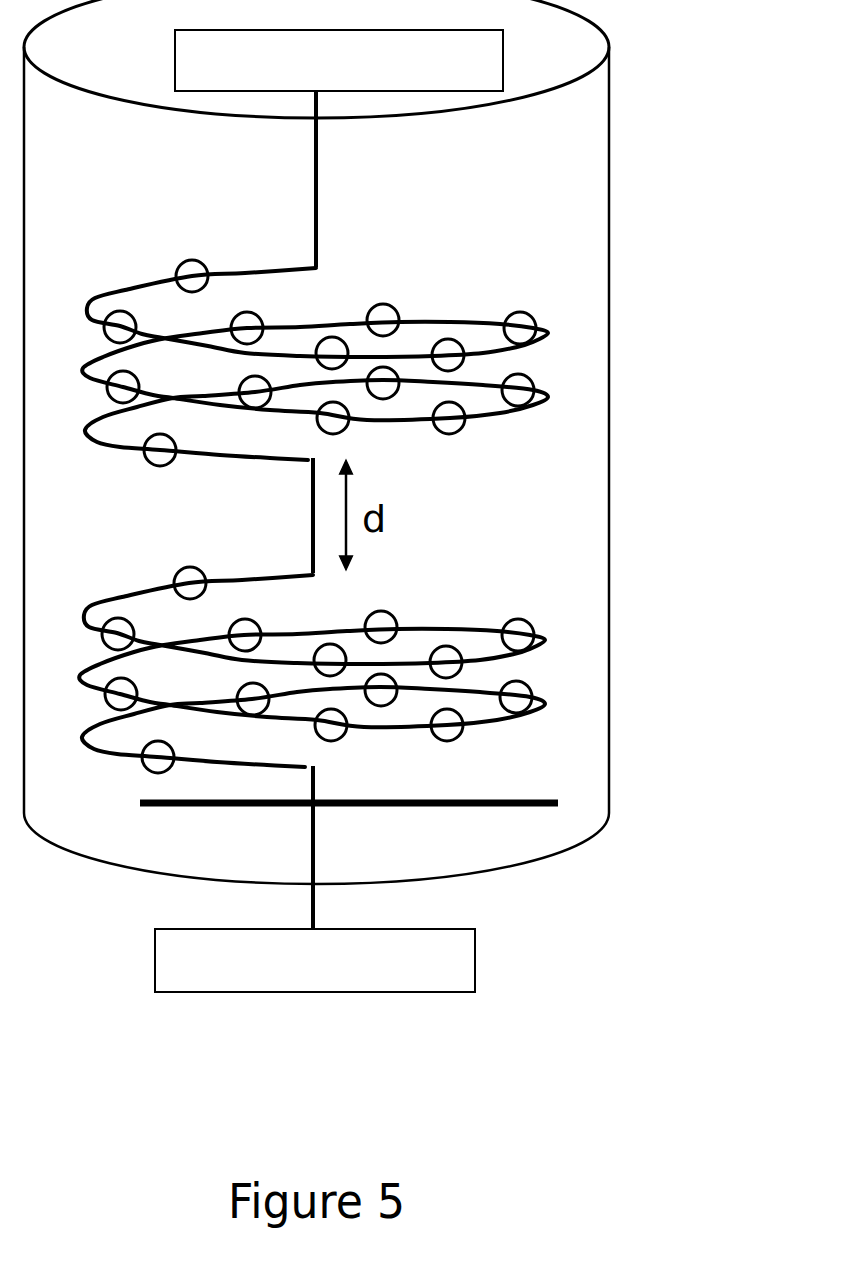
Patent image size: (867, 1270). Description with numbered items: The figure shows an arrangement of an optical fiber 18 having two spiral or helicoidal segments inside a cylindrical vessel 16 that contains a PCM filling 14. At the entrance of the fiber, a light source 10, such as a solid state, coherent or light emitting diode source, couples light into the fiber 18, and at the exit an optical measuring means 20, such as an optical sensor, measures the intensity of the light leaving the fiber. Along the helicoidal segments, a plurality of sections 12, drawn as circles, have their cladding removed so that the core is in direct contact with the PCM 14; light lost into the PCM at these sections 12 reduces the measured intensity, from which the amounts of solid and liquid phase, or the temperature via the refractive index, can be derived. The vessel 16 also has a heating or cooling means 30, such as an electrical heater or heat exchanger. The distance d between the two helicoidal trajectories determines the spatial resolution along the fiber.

The light source 10 is at (316, 81).
The sections of the fiber with cladding removed 12 is at (448, 435).
The PCM filling 14 is at (425, 584).
The vessel 16 is at (609, 406).
The optical fiber 18 is at (538, 334).
The optical measuring means 20 is at (329, 978).
The heating or cooling means 30 is at (592, 793).